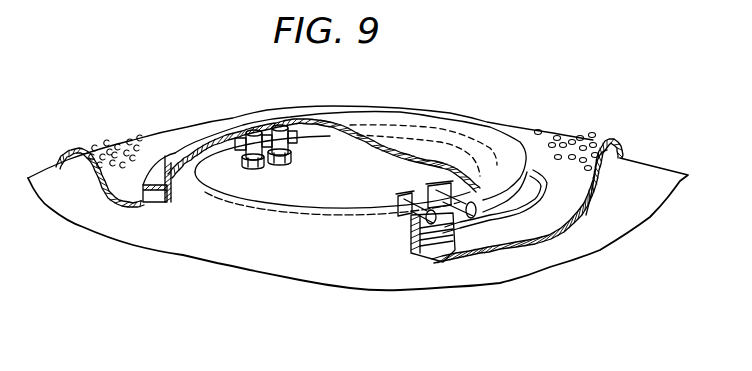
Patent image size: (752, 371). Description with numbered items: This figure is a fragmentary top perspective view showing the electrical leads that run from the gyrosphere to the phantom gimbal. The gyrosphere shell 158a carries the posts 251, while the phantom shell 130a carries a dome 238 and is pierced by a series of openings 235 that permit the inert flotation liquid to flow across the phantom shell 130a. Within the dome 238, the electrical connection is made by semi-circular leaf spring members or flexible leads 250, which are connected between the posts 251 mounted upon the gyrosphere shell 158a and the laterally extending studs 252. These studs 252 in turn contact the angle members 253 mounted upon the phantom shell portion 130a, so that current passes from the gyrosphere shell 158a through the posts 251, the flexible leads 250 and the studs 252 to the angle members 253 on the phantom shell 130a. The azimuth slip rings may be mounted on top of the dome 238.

The phantom shell 130a is at (159, 142).
The gyrosphere shell 158a is at (309, 270).
The openings 235 is at (119, 153).
The dome 238 is at (347, 116).
The flexible leads 250 is at (327, 136).
The posts 251 is at (279, 128).
The laterally extending studs 252 is at (423, 233).
The angle members 253 is at (485, 227).